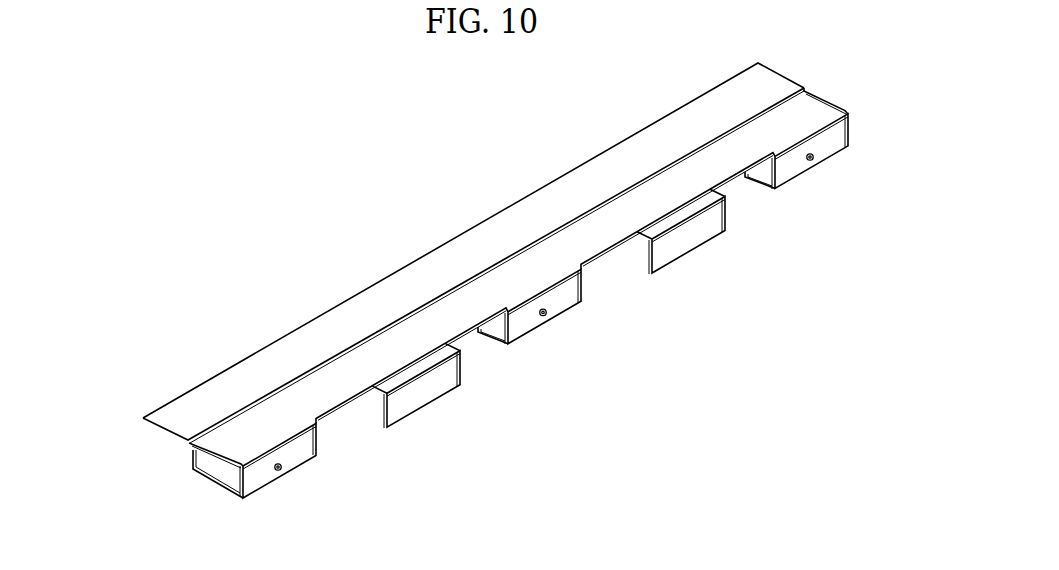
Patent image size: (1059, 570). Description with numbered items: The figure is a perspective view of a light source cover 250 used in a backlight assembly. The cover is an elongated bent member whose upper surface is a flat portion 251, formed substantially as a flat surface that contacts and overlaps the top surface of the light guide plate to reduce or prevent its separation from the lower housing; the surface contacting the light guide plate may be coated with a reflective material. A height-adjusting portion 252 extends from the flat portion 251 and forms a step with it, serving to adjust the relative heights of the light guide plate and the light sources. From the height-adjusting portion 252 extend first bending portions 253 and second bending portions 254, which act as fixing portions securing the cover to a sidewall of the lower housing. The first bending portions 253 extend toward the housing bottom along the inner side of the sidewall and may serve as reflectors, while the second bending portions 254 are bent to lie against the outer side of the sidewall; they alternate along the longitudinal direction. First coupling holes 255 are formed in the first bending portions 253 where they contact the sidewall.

The light source cover 250 is at (338, 490).
The flat portion 251 is at (178, 420).
The height-adjusting portion 252 is at (213, 438).
The first bending portions 253 is at (257, 476).
The second bending portions 254 is at (416, 397).
The first coupling holes 255 is at (282, 471).